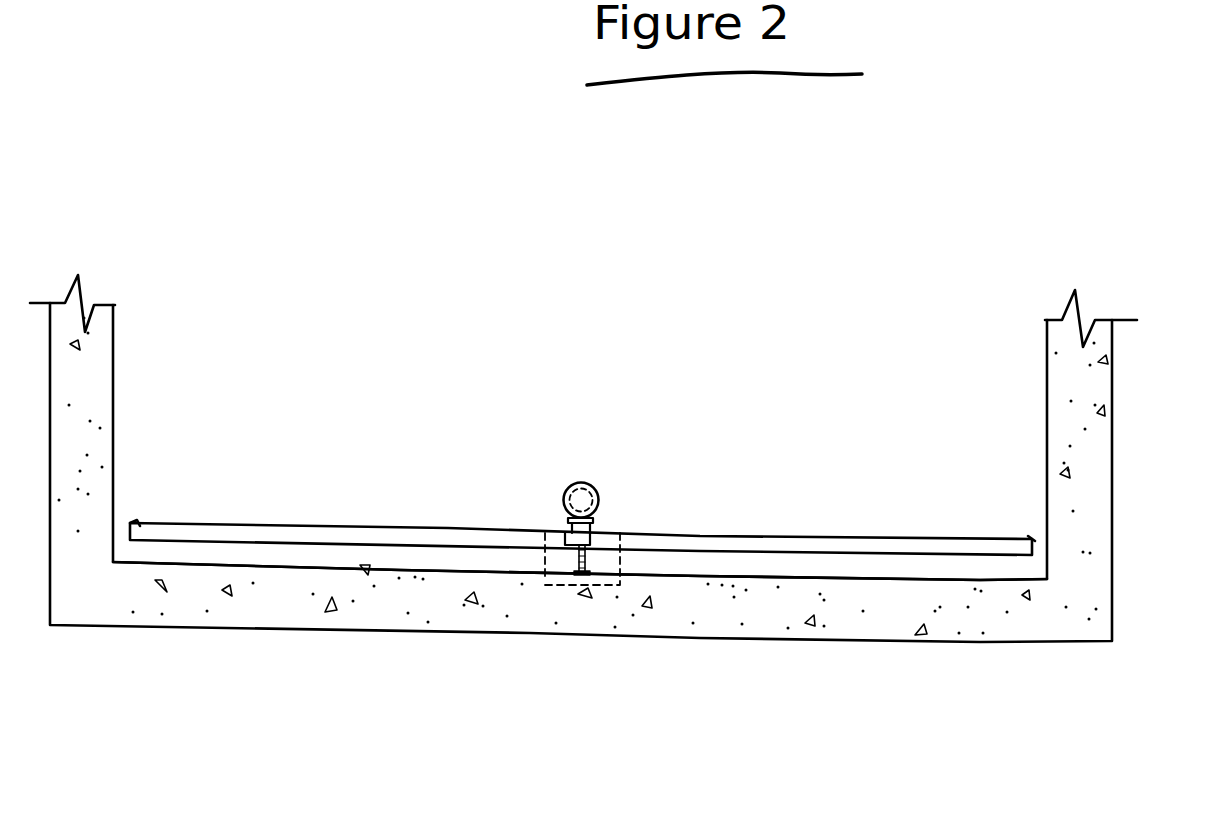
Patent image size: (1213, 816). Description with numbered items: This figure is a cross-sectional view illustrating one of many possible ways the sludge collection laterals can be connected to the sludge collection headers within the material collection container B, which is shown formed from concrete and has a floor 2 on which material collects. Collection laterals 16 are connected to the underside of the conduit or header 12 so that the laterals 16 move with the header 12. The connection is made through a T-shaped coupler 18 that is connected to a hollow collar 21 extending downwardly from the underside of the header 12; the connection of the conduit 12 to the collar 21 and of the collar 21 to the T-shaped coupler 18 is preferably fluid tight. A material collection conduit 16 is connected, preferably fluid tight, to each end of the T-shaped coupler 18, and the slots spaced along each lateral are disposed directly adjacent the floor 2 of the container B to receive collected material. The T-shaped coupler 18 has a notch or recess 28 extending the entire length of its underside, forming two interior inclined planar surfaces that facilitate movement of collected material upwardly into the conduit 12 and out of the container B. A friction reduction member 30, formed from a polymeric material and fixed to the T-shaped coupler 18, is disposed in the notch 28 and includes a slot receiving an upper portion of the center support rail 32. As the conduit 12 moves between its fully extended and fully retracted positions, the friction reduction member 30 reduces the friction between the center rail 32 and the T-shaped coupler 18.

The floor 2 is at (236, 557).
The conduit or header 12 is at (570, 480).
The collection laterals 16 is at (448, 528).
The T-shaped coupler 18 is at (592, 533).
The hollow collar 21 is at (570, 522).
The notch or recess 28 is at (612, 683).
The friction reduction member 30 is at (595, 548).
The center support rail 32 is at (613, 585).
The material collection container B is at (1092, 552).